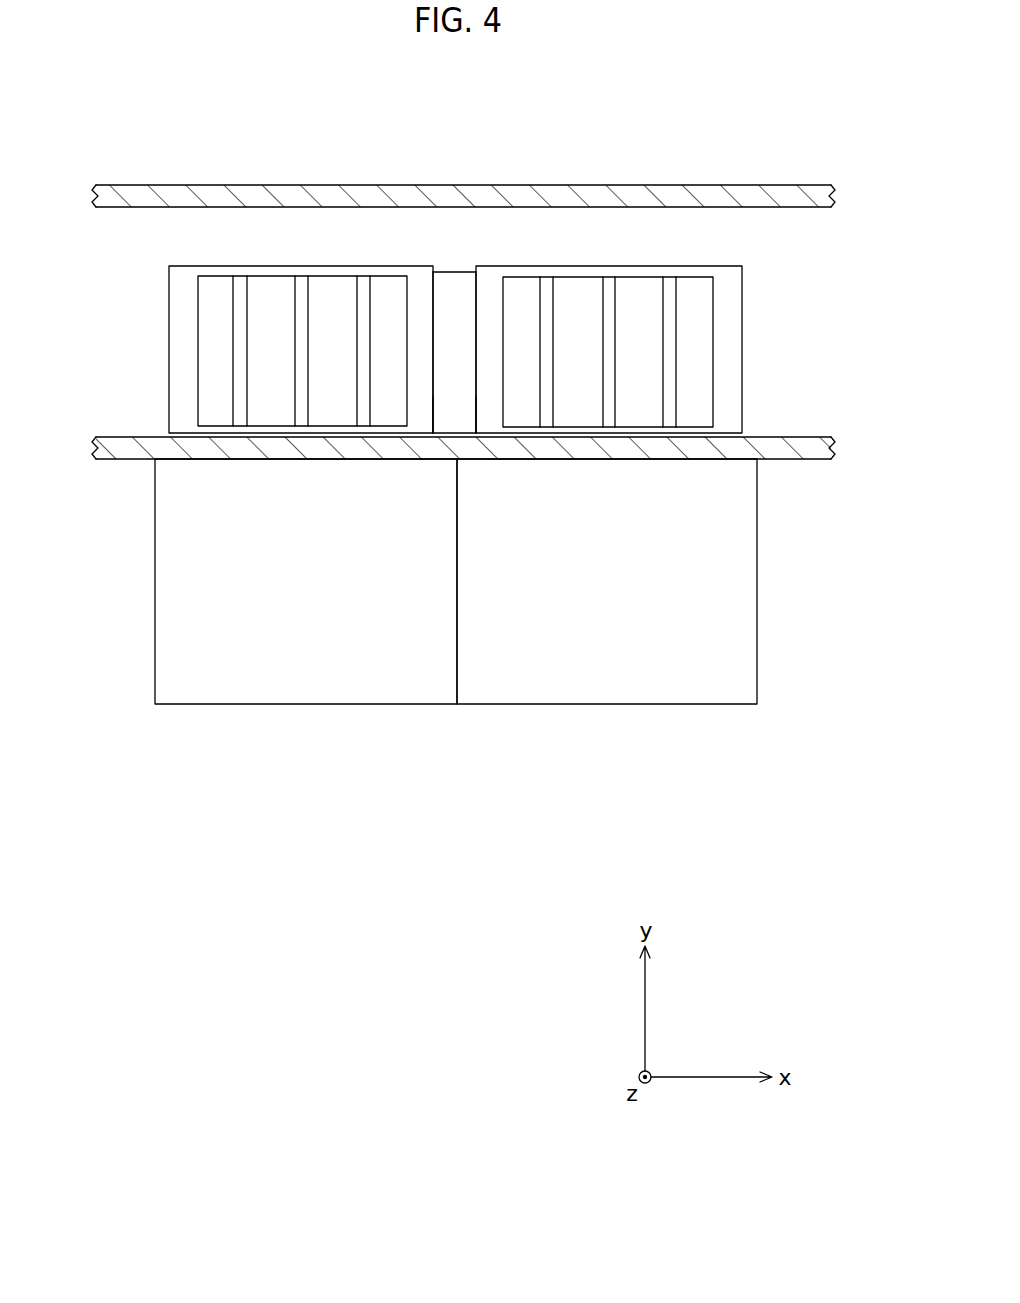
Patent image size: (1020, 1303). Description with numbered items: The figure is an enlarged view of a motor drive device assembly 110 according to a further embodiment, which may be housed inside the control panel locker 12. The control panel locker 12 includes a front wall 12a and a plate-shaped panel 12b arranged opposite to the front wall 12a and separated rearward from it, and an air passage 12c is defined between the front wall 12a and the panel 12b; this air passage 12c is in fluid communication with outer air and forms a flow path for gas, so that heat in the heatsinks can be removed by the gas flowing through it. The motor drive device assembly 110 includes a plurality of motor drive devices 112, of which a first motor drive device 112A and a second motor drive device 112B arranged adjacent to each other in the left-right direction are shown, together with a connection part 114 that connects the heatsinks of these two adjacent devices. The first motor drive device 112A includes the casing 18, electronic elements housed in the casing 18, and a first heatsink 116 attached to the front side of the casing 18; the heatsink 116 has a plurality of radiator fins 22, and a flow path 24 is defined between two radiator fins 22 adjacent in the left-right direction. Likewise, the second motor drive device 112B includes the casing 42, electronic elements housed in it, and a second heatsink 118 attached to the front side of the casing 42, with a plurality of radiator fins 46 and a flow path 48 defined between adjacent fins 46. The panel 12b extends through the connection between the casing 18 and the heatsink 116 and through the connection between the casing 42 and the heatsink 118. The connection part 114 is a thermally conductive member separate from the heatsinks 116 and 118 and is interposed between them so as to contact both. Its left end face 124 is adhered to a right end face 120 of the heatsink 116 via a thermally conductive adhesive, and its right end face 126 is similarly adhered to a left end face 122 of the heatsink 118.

The control panel locker 12 is at (751, 181).
The front wall 12a is at (600, 197).
The panel 12b is at (790, 452).
The air passage 12c is at (804, 239).
The casing 18 is at (176, 616).
The radiator fins 22 is at (363, 305).
The flow path 24 is at (383, 410).
The casing 42 is at (676, 632).
The radiator fins 46 is at (670, 290).
The flow path 48 is at (688, 418).
The motor drive device assembly 110 is at (643, 790).
The motor drive devices 112 is at (377, 811).
The first motor drive device 112A is at (345, 726).
The second motor drive device 112B is at (573, 726).
The connection part 114 is at (447, 254).
The heatsink 116 is at (243, 264).
The heatsink 118 is at (699, 262).
The right end face 120 is at (440, 292).
The left end face 122 is at (470, 292).
The left end face 124 is at (433, 397).
The right end face 126 is at (476, 397).